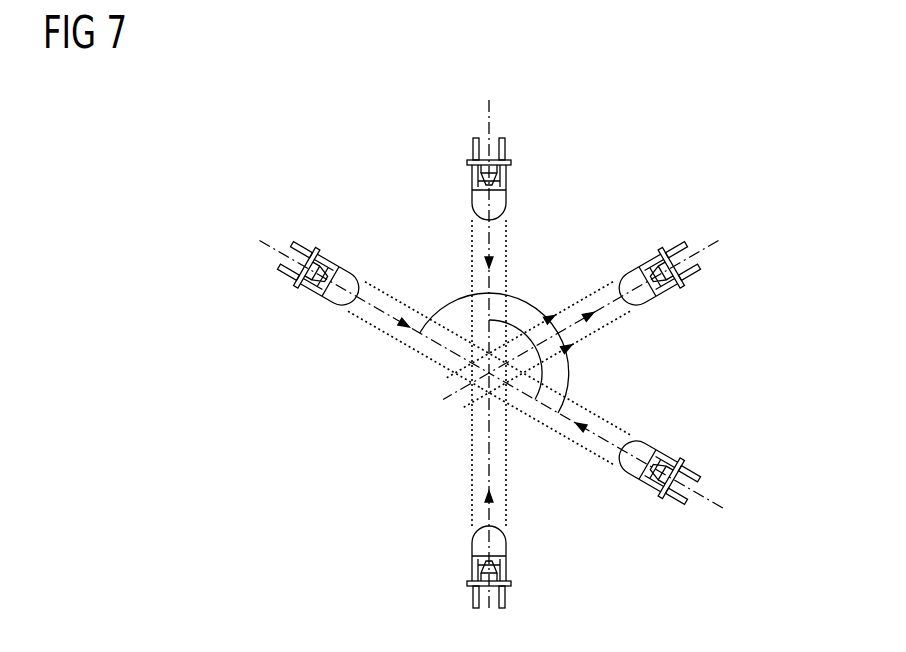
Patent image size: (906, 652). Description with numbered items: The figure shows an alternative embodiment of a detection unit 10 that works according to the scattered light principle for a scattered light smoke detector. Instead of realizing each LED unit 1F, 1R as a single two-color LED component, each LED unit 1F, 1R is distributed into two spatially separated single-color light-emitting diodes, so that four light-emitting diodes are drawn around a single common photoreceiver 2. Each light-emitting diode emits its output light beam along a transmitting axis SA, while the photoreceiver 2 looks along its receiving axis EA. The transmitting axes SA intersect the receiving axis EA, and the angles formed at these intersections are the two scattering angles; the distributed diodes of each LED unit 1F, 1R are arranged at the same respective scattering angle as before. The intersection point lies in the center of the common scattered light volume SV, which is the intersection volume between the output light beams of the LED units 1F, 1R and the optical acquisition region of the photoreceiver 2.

The detection unit 10 is at (667, 130).
The photoreceiver 2 is at (638, 297).
The LED unit 1F is at (359, 414).
The LED unit 1R is at (548, 313).
The transmitting axis SA is at (375, 324).
The scattered light volume SV is at (466, 380).
The receiving axis EA is at (600, 306).